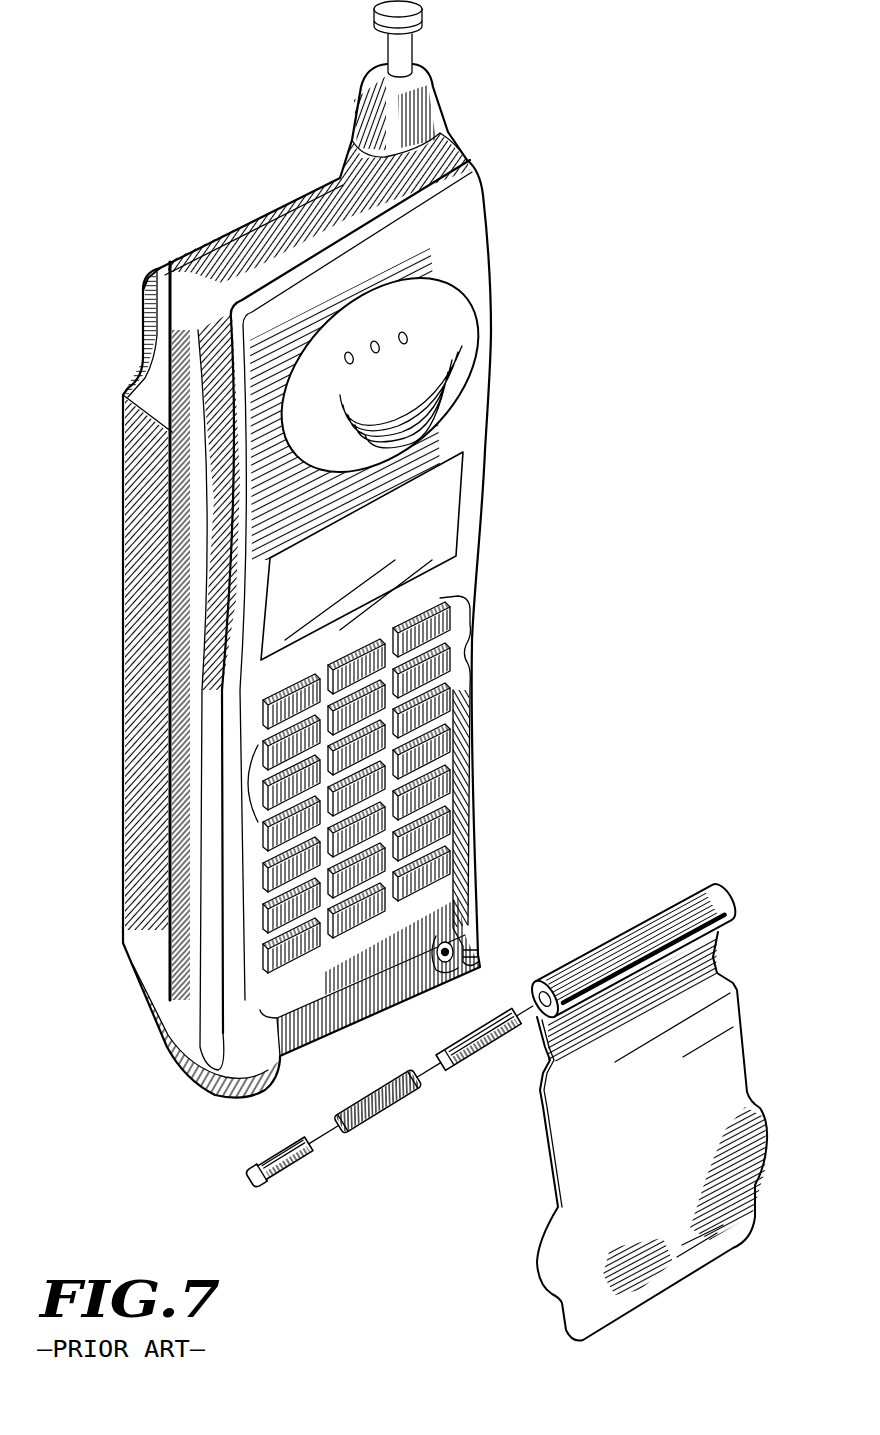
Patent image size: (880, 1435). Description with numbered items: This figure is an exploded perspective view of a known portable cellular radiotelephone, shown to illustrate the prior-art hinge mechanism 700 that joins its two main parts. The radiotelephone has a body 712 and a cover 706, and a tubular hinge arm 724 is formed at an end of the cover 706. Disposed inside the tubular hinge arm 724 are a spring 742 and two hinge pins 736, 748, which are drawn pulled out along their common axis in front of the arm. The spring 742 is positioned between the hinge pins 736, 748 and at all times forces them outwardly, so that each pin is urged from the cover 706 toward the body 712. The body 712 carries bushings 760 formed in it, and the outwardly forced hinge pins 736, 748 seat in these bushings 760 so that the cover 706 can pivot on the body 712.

The body 712 is at (475, 765).
The tubular hinge arm 724 is at (622, 937).
The cover 706 is at (538, 1262).
The hinge pin assembly 700 is at (323, 1137).
The hinge pin 736 is at (265, 1180).
The spring 742 is at (383, 1113).
The hinge pin 748 is at (497, 1050).
The bushings 760 is at (458, 968).